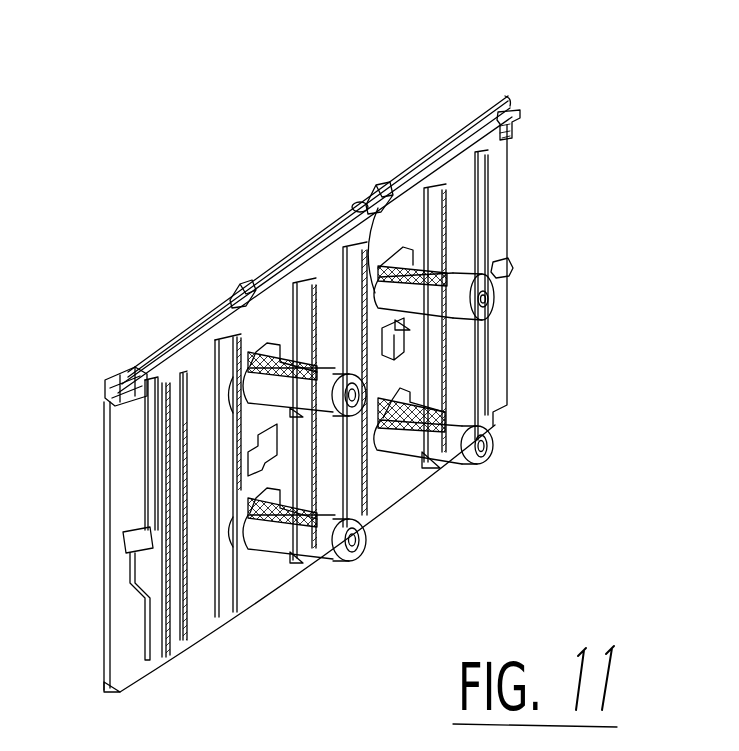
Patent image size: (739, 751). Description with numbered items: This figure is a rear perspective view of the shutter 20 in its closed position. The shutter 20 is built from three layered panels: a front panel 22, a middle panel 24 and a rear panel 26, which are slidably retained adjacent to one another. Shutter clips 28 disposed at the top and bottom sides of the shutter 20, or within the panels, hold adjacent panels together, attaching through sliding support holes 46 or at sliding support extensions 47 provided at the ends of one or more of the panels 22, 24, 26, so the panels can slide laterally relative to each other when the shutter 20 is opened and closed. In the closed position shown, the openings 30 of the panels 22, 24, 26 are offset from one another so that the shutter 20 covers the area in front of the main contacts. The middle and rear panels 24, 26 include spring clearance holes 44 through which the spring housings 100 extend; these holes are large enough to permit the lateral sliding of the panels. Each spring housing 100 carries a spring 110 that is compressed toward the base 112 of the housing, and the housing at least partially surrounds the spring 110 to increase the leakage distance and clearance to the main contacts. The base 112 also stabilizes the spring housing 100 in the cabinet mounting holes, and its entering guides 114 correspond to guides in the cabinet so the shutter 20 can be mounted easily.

The shutter 20 is at (579, 83).
The front panel 22 is at (122, 470).
The middle panel 24 is at (148, 362).
The rear panel 26 is at (470, 142).
The shutter clip 28 is at (362, 368).
The opening 30 is at (227, 593).
The spring clearance hole 44 is at (263, 350).
The sliding support hole 46 is at (380, 187).
The sliding support extension 47 is at (512, 272).
The spring housing 100 is at (470, 272).
The spring 110 is at (440, 415).
The base 112 is at (485, 446).
The entering guide 114 is at (466, 468).